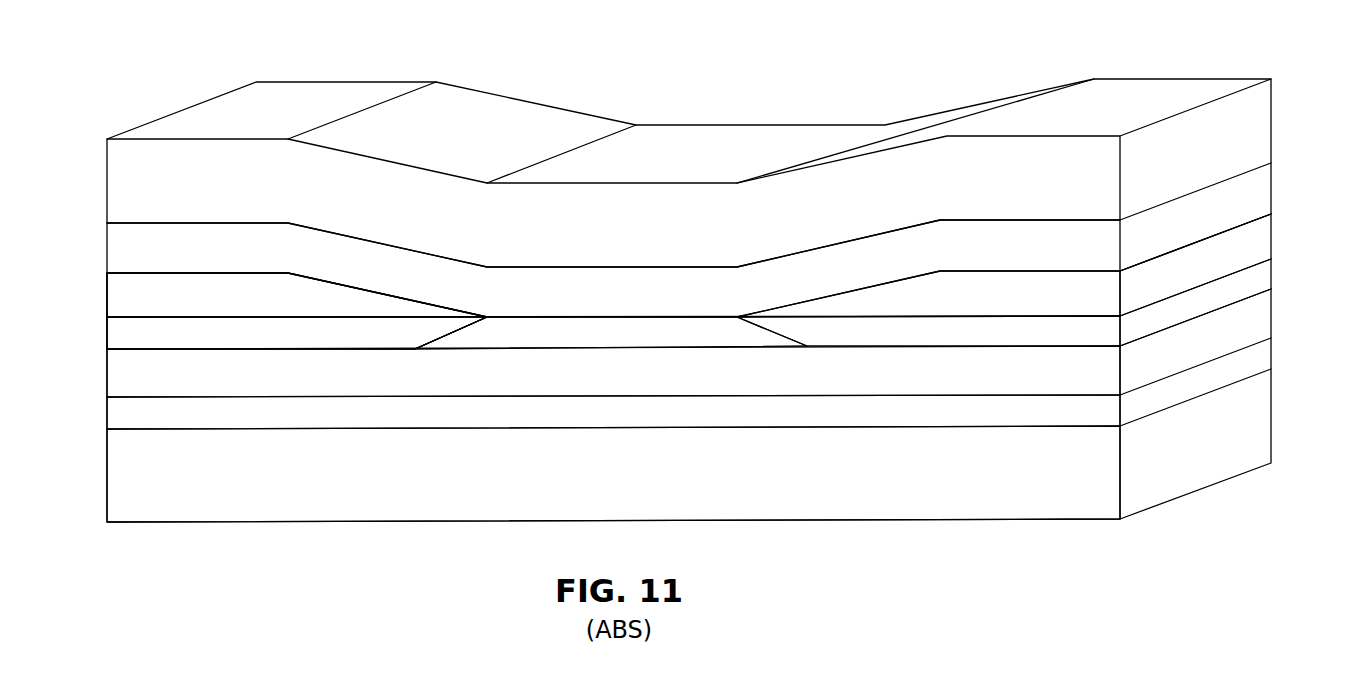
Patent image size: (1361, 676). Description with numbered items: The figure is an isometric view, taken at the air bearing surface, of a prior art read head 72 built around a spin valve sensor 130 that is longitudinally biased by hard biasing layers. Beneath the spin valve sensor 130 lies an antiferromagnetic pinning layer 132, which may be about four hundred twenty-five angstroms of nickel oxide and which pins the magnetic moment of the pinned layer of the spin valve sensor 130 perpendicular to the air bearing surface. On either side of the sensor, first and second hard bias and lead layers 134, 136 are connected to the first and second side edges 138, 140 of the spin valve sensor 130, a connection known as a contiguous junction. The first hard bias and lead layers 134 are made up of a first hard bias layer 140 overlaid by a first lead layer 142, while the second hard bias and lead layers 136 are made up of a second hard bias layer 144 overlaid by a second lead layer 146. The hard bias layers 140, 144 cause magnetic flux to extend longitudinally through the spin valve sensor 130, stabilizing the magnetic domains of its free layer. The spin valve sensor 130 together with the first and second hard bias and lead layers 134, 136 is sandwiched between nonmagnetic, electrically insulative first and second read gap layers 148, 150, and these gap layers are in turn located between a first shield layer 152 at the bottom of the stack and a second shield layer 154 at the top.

The read head 72 is at (764, 96).
The spin valve sensor 130 is at (523, 306).
The antiferromagnetic pinning layer 132 is at (804, 377).
The first hard bias and lead layers 134 is at (102, 274).
The second hard bias and lead layers 136 is at (1277, 214).
The first side edge 138 is at (437, 341).
The first hard bias layer 140 is at (150, 335).
The first lead layer 142 is at (150, 285).
The second hard bias layer 144 is at (1069, 333).
The second lead layer 146 is at (1069, 283).
The first read gap layer 148 is at (388, 417).
The second read gap layer 150 is at (352, 257).
The first shield layer 152 is at (277, 502).
The second shield layer 154 is at (543, 115).